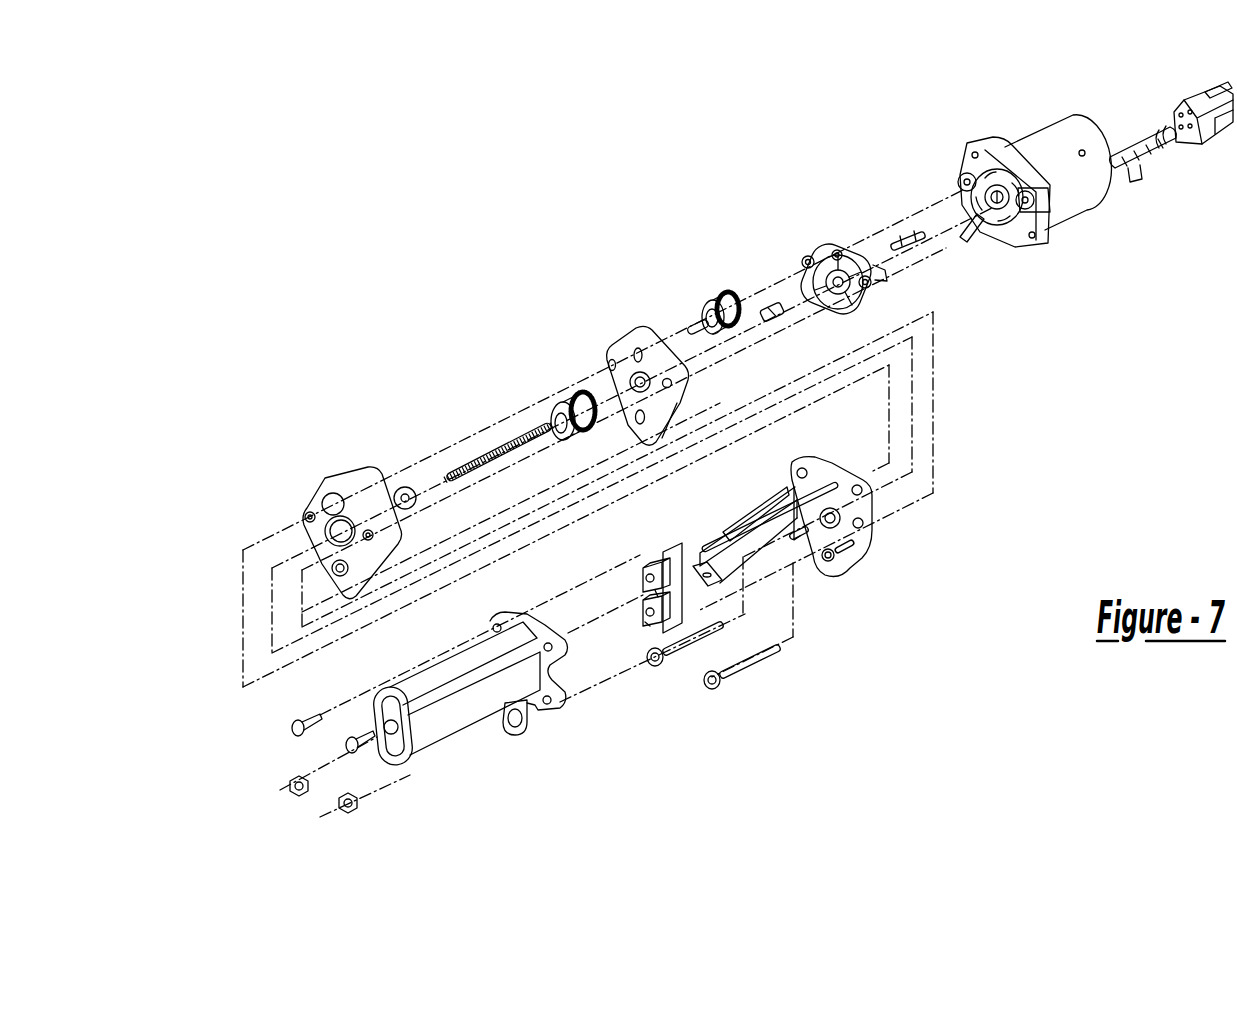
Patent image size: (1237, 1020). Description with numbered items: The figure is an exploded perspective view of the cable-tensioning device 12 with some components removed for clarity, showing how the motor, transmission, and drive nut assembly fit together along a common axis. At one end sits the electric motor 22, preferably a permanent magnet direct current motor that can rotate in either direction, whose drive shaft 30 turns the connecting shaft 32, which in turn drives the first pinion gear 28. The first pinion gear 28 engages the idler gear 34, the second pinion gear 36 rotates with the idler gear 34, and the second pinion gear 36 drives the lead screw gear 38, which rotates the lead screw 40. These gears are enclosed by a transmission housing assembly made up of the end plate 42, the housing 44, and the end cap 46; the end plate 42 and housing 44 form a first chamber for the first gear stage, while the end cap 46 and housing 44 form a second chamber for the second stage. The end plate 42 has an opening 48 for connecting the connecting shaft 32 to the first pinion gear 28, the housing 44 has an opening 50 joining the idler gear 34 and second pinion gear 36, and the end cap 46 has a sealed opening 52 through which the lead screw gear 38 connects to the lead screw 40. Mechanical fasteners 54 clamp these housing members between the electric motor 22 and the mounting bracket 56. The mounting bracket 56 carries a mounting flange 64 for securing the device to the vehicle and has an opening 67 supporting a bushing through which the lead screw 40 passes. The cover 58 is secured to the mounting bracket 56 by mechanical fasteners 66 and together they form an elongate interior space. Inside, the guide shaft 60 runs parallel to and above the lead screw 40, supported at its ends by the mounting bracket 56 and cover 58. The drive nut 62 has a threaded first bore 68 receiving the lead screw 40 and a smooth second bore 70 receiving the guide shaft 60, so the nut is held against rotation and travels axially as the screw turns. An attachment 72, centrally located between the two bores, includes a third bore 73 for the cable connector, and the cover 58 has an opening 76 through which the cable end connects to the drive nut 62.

The cable-tensioning device 12 is at (585, 175).
The electric motor 22 is at (1047, 120).
The first pinion gear 28 is at (768, 305).
The drive shaft 30 is at (1003, 226).
The connecting shaft 32 is at (903, 238).
The idler gear 34 is at (712, 296).
The second pinion gear 36 is at (690, 326).
The lead screw gear 38 is at (563, 395).
The lead screw 40 is at (483, 452).
The end plate 42 is at (833, 232).
The housing 44 is at (642, 327).
The end cap 46 is at (350, 470).
The opening 48 is at (822, 298).
The opening 50 is at (636, 350).
The opening 52 is at (340, 522).
The mechanical fasteners 54 is at (668, 662).
The mounting bracket 56 is at (860, 576).
The cover 58 is at (480, 732).
The guide shaft 60 is at (772, 500).
The drive nut 62 is at (660, 568).
The mounting flange 64 is at (706, 560).
The mechanical fasteners 66 is at (292, 722).
The opening 67 is at (810, 545).
The first bore 68 is at (648, 622).
The second bore 70 is at (647, 575).
The attachment 72 is at (644, 600).
The third bore 73 is at (647, 594).
The opening 76 is at (403, 752).